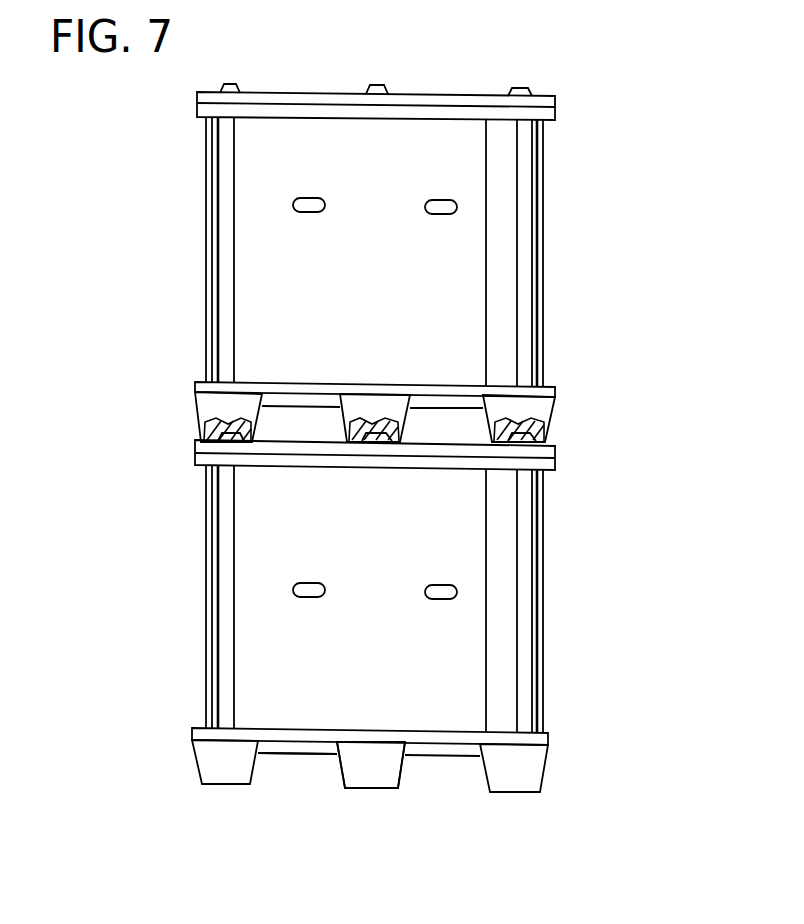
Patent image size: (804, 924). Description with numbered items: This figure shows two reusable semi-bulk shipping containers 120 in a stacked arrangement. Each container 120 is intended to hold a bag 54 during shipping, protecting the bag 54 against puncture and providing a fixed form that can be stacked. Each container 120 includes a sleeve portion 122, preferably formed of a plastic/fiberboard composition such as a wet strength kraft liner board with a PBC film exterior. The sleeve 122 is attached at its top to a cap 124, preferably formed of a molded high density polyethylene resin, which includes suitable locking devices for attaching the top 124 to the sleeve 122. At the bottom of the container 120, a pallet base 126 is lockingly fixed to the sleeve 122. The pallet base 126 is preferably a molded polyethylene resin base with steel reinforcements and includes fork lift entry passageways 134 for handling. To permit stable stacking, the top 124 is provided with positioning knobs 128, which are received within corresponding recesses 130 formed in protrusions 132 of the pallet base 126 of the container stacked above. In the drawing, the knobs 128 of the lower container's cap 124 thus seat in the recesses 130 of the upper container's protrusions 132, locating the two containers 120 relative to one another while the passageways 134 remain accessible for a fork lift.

The semi-bulk container 120 is at (552, 295).
The sleeve portion 122 is at (392, 327).
The cap 124 is at (558, 122).
The pallet base 126 is at (538, 410).
The positioning knobs 128 is at (518, 88).
The recesses 130 is at (202, 422).
The protrusions 132 is at (365, 762).
The fork lift entry passageways 134 is at (282, 763).
The bag 54 is at (458, 206).